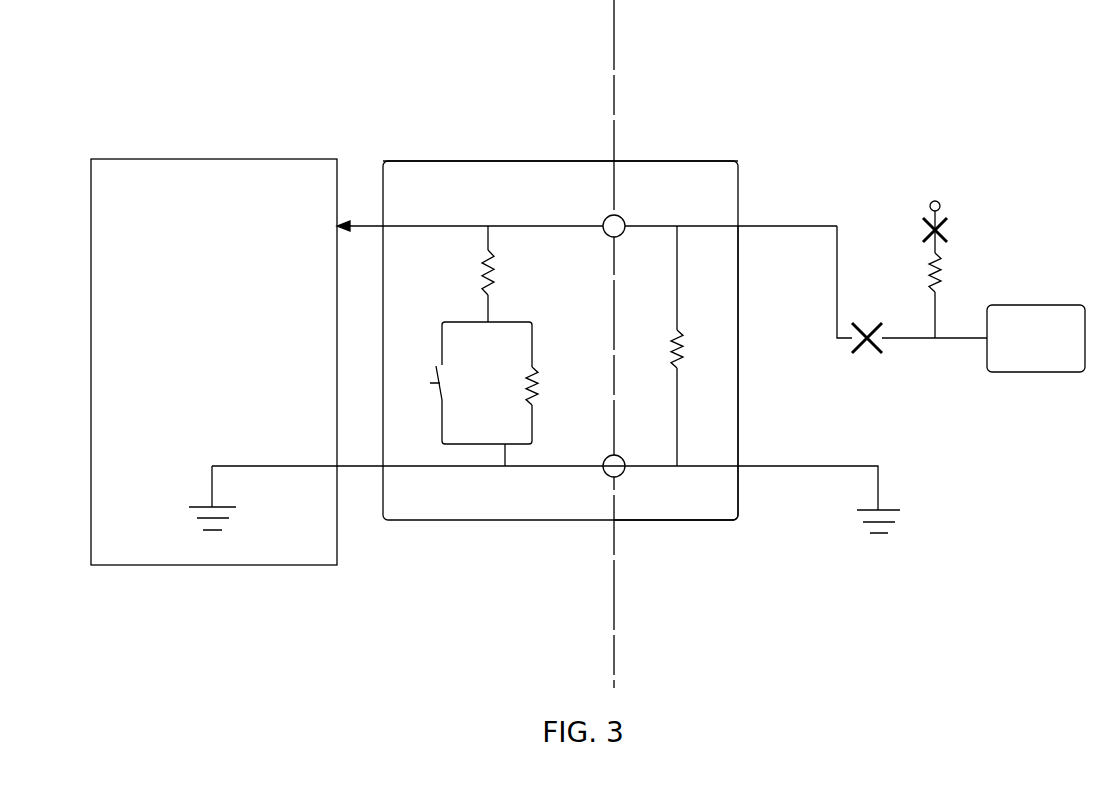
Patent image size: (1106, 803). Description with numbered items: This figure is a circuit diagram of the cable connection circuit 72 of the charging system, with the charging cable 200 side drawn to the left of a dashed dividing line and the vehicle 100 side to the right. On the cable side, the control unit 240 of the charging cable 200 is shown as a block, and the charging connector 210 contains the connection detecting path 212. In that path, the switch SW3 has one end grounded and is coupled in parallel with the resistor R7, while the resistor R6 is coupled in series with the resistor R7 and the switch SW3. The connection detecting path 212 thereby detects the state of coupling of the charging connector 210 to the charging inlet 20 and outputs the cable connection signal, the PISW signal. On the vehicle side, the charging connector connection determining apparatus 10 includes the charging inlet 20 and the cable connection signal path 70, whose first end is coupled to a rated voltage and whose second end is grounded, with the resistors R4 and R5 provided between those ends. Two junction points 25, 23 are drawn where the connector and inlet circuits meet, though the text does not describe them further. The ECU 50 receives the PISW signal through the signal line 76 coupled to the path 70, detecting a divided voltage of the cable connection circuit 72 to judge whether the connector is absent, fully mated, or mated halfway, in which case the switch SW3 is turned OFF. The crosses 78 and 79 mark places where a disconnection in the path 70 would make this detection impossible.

The control unit 240 is at (244, 159).
The charging connector 210 is at (437, 520).
The charging inlet 20 is at (712, 520).
The charging connector connection determining apparatus 10 is at (681, 142).
The connection detecting path 212 is at (527, 226).
The cable connection circuit 72 is at (762, 226).
The cable connection signal path 70 is at (827, 226).
The disconnection 78 is at (867, 350).
The signal line 76 is at (957, 338).
The resistor R4 is at (952, 253).
The disconnection 79 is at (950, 231).
The electronic control unit (ECU) 50 is at (1035, 372).
The terminal 25 is at (624, 219).
The terminal 23 is at (624, 475).
The resistor R5 is at (700, 346).
The resistor R6 is at (463, 274).
The switch SW3 is at (459, 394).
The resistor R7 is at (555, 384).
The charging cable 200 is at (582, 634).
The vehicle 100 is at (633, 634).